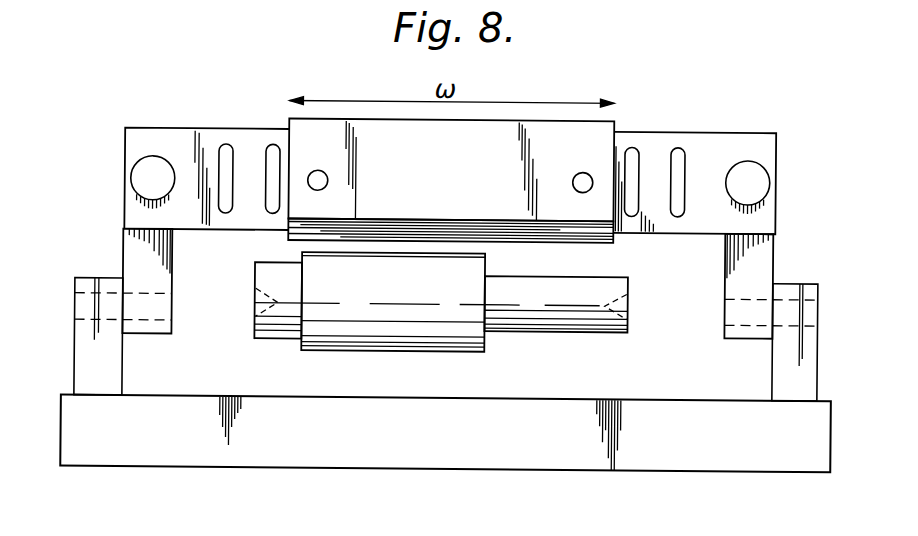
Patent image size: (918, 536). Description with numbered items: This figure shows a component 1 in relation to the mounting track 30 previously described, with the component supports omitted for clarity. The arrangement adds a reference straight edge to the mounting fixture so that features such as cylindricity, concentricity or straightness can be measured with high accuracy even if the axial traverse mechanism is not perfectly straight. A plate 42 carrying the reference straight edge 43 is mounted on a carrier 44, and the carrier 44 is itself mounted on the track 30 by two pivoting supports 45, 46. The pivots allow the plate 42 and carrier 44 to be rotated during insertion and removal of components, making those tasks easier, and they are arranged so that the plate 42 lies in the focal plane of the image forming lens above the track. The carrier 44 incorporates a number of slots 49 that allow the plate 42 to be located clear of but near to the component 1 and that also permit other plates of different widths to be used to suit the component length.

The component 1 is at (412, 318).
The mounting track 30 is at (410, 450).
The plate 42 is at (468, 189).
The reference straight edge 43 is at (578, 244).
The carrier 44 is at (450, 158).
The pivoting support 45 is at (87, 280).
The pivoting support 46 is at (805, 282).
The slots 49 is at (679, 147).